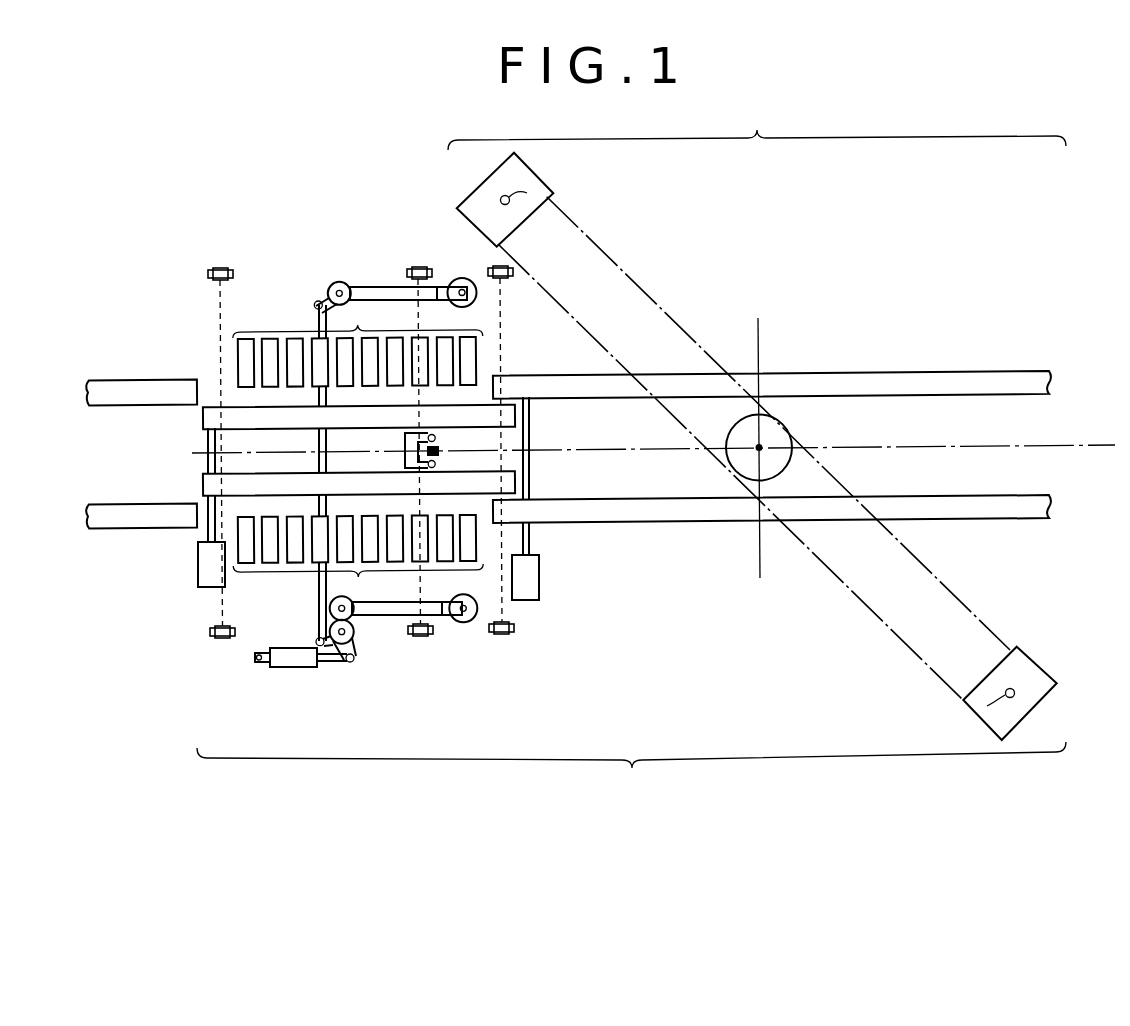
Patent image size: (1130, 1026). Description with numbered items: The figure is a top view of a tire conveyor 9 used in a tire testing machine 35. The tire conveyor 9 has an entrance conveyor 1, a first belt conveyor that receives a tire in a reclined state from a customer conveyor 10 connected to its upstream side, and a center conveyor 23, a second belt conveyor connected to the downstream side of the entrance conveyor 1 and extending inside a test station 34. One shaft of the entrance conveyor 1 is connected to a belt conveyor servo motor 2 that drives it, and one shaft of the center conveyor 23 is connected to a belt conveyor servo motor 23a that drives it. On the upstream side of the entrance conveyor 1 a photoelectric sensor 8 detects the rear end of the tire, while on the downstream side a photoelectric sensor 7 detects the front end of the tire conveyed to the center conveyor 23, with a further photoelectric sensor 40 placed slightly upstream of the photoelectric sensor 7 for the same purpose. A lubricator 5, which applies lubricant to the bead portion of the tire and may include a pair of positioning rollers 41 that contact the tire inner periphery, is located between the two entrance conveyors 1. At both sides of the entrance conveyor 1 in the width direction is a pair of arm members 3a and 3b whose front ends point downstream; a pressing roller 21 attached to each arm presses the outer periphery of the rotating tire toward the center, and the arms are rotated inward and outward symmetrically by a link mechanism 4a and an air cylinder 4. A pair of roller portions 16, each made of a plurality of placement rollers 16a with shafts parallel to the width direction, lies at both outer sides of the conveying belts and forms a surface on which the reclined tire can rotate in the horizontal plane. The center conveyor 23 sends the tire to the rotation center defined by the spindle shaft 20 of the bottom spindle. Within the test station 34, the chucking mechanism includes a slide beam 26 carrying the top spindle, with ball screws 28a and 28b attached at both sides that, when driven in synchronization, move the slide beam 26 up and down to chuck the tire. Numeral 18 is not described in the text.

The entrance conveyor 1 is at (293, 483).
The belt conveyor servo motor 2 is at (198, 566).
The arm member 3a is at (401, 615).
The arm member 3b is at (397, 287).
The air cylinder 4 is at (295, 667).
The link mechanism 4a is at (336, 661).
The lubricator 5 is at (436, 437).
The photoelectric sensor 7 is at (503, 635).
The photoelectric sensor 8 is at (221, 638).
The tire conveyor 9 is at (631, 770).
The customer conveyor 10 is at (148, 514).
The roller portion 16 is at (358, 451).
The placement roller 16a is at (297, 560).
The conveying direction 18 is at (1082, 438).
The spindle shaft 20 is at (757, 449).
The pressing roller 21 is at (460, 278).
The center conveyor 23 is at (908, 500).
The belt conveyor servo motor 23a is at (540, 576).
The slide beam 26 is at (652, 297).
The ball screw 28a is at (546, 178).
The ball screw 28b is at (970, 710).
The test station 34 is at (757, 127).
The tire testing machine 35 is at (256, 177).
The photoelectric sensor 40 is at (421, 637).
The positioning roller 41 is at (436, 465).